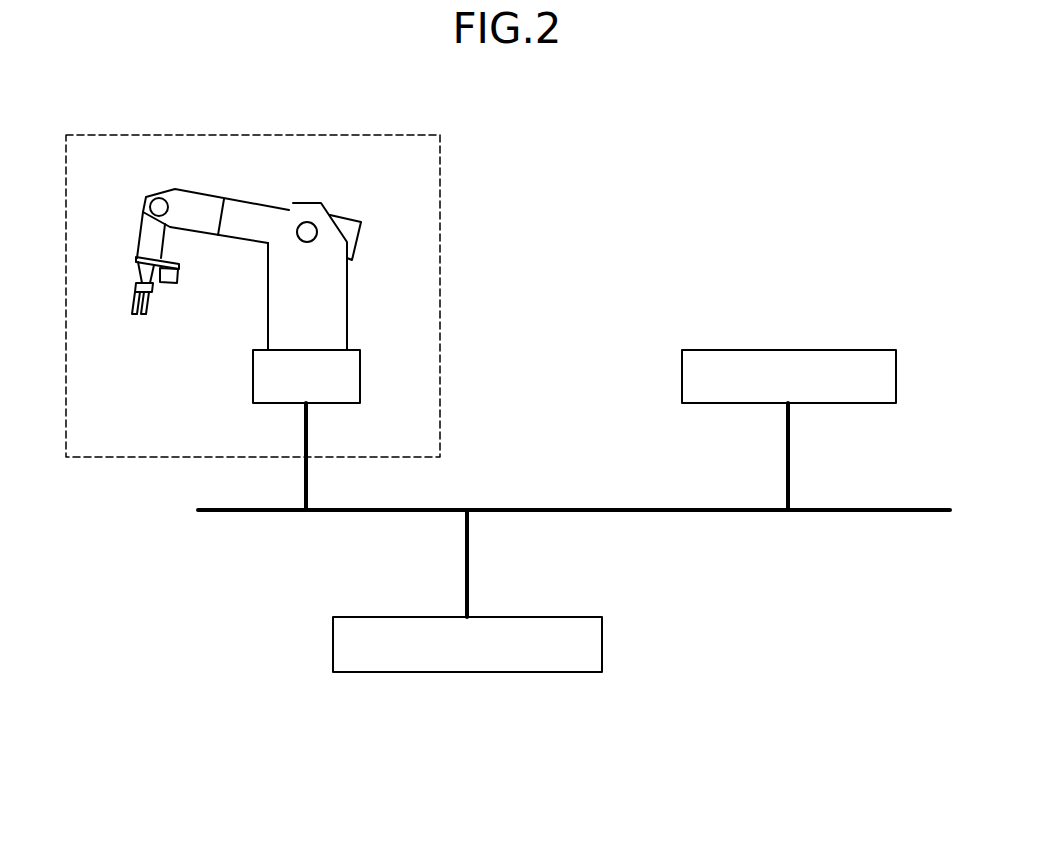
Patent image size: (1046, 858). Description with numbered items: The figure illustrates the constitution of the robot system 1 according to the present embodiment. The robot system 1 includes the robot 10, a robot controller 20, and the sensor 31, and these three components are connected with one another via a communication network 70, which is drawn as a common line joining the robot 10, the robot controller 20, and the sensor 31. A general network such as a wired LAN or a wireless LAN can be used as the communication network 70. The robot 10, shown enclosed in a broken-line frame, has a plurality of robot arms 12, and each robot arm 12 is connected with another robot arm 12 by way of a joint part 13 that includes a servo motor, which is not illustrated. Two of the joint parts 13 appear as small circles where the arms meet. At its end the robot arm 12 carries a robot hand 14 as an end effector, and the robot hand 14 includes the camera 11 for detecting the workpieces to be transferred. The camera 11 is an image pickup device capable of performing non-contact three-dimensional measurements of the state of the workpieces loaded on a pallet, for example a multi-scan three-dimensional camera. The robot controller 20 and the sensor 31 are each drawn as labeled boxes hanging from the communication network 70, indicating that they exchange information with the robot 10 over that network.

The robot system 1 is at (659, 132).
The robot 10 is at (440, 188).
The camera 11 is at (169, 271).
The robot arm 12 is at (255, 210).
The joint part 13 is at (159, 207).
The robot hand 14 is at (130, 308).
The robot controller 20 is at (532, 672).
The sensor 31 is at (843, 350).
The communication network 70 is at (883, 511).